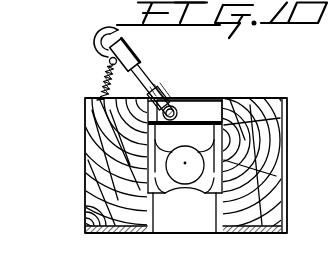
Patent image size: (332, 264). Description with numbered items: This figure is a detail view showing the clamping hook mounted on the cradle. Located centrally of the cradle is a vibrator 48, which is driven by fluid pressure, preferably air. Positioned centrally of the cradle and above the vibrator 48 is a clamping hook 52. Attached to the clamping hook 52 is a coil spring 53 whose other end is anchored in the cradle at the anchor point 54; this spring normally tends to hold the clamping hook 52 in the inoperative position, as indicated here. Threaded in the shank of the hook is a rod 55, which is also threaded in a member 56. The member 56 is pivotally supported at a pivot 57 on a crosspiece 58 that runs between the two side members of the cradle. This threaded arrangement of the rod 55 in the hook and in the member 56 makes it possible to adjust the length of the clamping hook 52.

The vibrator 48 is at (189, 174).
The clamping hook 52 is at (88, 44).
The coil spring 53 is at (97, 79).
The anchor point of spring in cradle 54 is at (97, 100).
The rod 55 is at (142, 75).
The member 56 is at (166, 103).
The pivot 57 is at (205, 114).
The crosspiece 58 is at (229, 112).